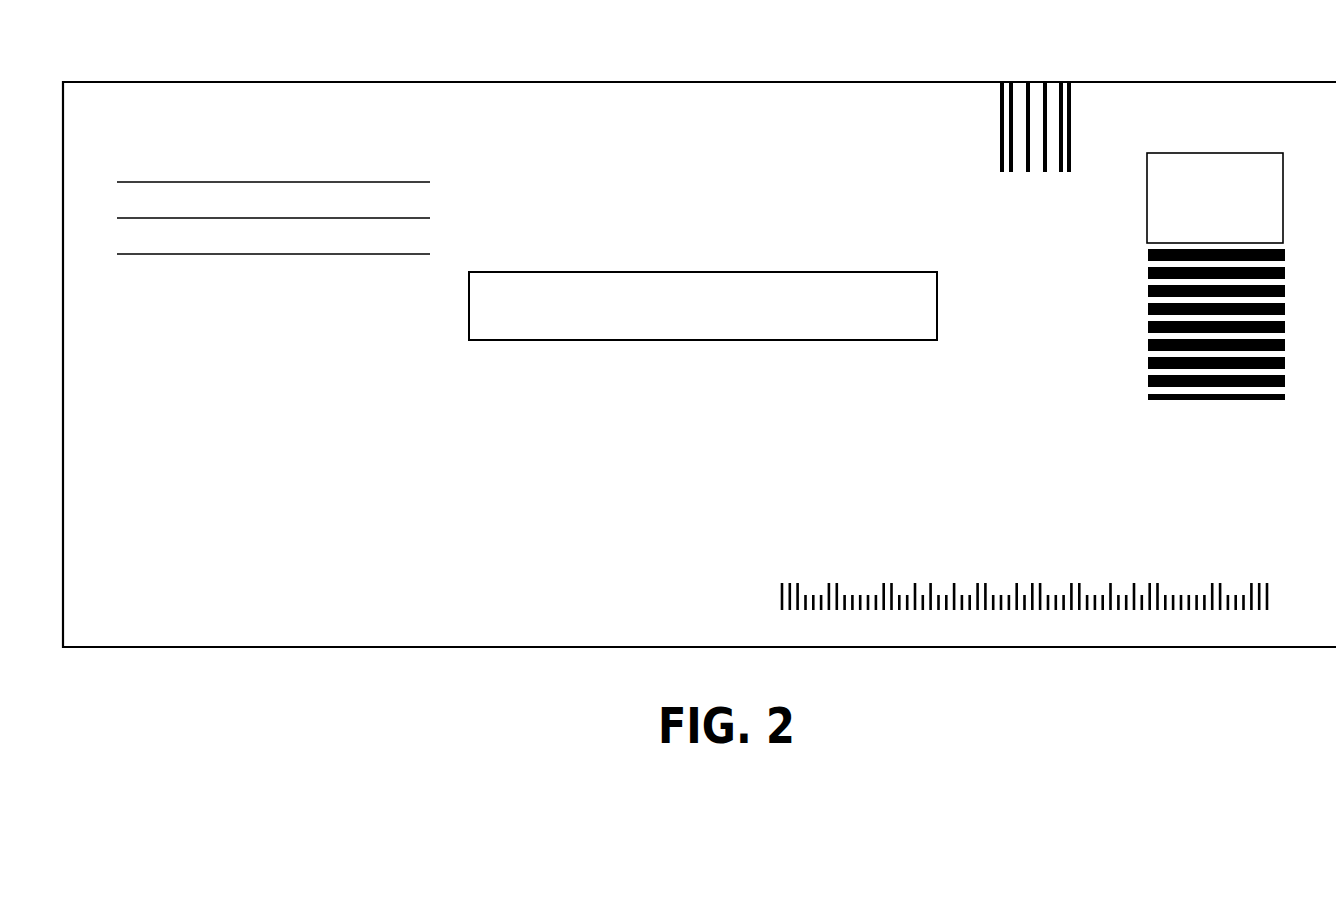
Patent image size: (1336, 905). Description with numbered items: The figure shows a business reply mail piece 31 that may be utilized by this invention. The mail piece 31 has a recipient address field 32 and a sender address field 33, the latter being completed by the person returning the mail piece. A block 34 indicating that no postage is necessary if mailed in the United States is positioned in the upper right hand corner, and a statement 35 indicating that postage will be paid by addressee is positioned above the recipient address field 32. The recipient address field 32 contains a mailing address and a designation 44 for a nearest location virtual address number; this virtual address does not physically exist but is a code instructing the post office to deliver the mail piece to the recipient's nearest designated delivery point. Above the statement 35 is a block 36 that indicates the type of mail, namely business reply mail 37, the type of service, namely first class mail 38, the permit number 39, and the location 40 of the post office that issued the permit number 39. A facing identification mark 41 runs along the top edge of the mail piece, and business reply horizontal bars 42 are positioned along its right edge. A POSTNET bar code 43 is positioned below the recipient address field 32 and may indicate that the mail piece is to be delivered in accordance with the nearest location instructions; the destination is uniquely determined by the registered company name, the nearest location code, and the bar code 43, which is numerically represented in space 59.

The business reply mail piece 31 is at (708, 82).
The recipient address field 32 is at (693, 466).
The sender address field 33 is at (423, 175).
The block 34 is at (1147, 195).
The statement 35 is at (545, 351).
The block 36 is at (669, 303).
The business reply mail 37 is at (638, 282).
The first class mail 38 is at (470, 328).
The permit number 39 is at (797, 327).
The location 40 is at (885, 340).
The facing identification mark 41 is at (1000, 122).
The business reply horizontal bars 42 is at (1150, 399).
The POSTNET bar code 43 is at (788, 583).
The designation 44 is at (710, 486).
The space 59 is at (1123, 690).